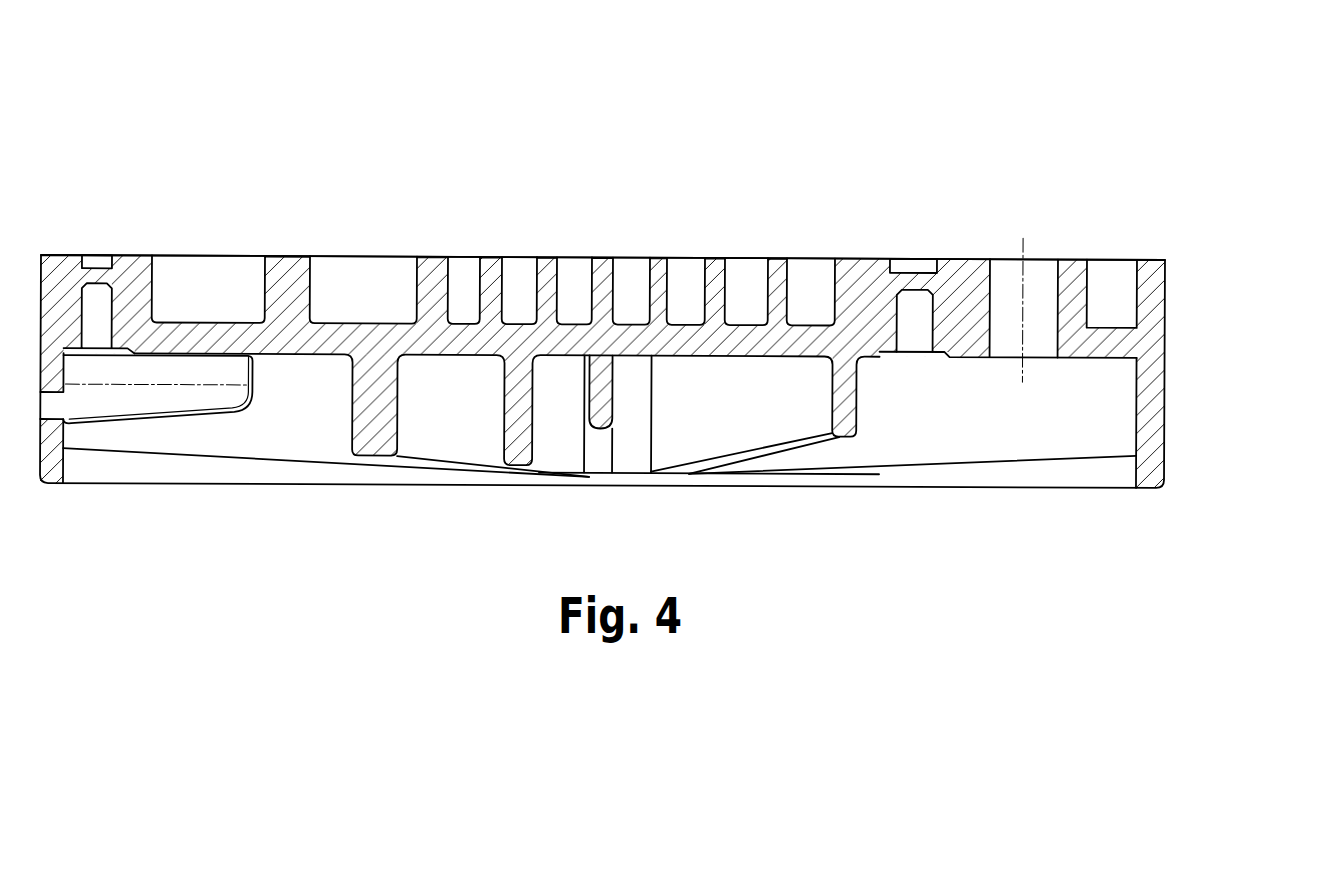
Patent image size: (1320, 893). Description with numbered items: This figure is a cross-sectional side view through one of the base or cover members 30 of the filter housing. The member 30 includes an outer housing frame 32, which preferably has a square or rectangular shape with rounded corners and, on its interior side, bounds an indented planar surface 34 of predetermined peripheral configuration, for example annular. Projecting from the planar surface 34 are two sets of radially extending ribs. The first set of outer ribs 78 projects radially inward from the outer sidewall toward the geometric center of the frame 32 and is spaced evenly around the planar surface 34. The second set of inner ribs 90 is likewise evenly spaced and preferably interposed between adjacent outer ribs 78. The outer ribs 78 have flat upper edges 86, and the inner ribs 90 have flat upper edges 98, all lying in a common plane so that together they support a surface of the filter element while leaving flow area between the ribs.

The base or cover member 30 is at (1111, 77).
The outer housing frame 32 is at (1165, 270).
The planar surface 34 is at (1110, 326).
The outer ribs 78 is at (480, 272).
The flat upper edges of outer ribs 86 is at (497, 258).
The inner ribs 90 is at (262, 268).
The flat upper edges of inner ribs 98 is at (288, 255).